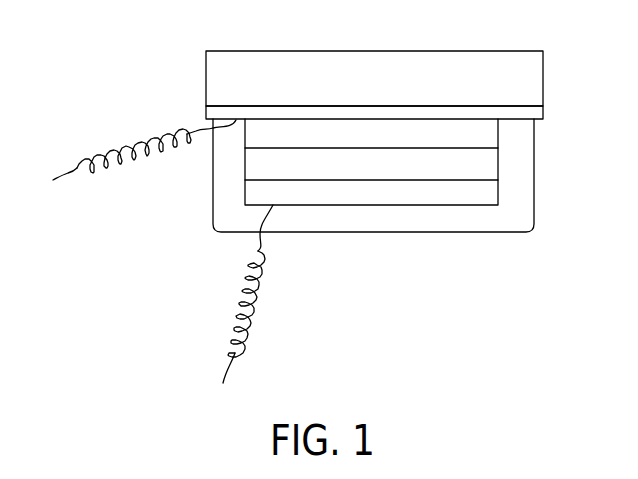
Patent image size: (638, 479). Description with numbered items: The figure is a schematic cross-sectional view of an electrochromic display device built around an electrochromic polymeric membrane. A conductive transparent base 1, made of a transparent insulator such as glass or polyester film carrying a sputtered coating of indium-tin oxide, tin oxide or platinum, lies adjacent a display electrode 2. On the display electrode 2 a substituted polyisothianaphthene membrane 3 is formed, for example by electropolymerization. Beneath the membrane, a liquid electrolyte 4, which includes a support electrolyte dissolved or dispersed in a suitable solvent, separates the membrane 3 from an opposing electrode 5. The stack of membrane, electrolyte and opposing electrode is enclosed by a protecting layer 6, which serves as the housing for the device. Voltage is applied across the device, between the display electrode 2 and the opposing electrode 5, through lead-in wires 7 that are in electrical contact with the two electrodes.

The transparent base 1 is at (533, 67).
The display electrode 2 is at (533, 112).
The substituted polyisothianaphthene membrane 3 is at (488, 134).
The liquid electrolyte 4 is at (488, 167).
The opposing electrode 5 is at (463, 195).
The protecting layer 6 is at (399, 221).
The lead-in wires 7 is at (66, 177).